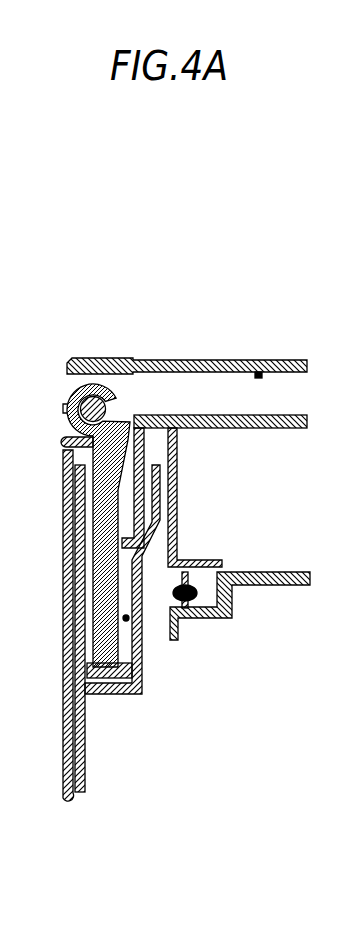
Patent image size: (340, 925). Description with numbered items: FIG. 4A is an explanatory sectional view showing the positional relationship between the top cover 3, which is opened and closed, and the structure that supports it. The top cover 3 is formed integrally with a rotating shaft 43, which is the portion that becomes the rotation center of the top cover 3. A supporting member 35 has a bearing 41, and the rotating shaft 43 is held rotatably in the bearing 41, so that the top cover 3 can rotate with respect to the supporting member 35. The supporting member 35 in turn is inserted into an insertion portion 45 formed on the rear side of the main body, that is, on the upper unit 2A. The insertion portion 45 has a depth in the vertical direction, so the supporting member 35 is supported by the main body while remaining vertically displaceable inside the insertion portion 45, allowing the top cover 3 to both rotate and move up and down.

The top cover 3 is at (235, 358).
The bearing 41 is at (67, 401).
The rotating shaft 43 is at (107, 412).
The supporting member 35 is at (108, 674).
The upper unit 2A is at (62, 678).
The insertion portion 45 is at (129, 620).